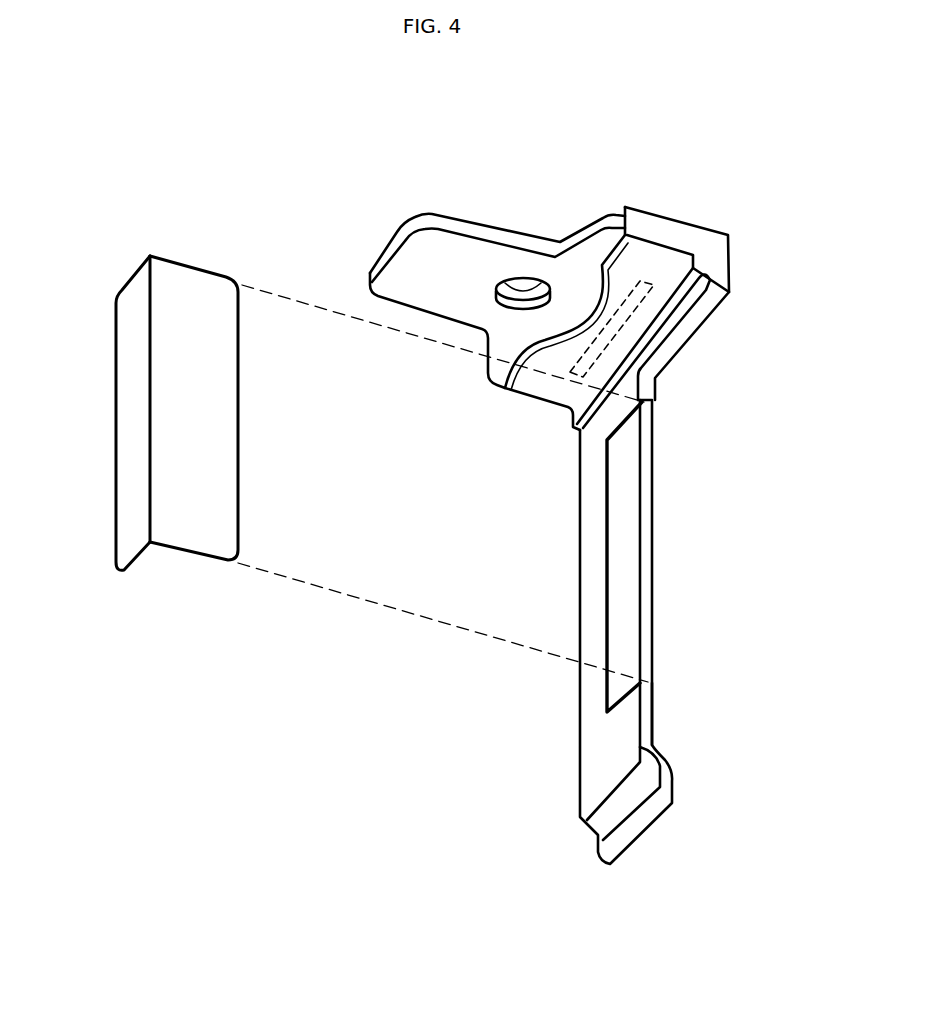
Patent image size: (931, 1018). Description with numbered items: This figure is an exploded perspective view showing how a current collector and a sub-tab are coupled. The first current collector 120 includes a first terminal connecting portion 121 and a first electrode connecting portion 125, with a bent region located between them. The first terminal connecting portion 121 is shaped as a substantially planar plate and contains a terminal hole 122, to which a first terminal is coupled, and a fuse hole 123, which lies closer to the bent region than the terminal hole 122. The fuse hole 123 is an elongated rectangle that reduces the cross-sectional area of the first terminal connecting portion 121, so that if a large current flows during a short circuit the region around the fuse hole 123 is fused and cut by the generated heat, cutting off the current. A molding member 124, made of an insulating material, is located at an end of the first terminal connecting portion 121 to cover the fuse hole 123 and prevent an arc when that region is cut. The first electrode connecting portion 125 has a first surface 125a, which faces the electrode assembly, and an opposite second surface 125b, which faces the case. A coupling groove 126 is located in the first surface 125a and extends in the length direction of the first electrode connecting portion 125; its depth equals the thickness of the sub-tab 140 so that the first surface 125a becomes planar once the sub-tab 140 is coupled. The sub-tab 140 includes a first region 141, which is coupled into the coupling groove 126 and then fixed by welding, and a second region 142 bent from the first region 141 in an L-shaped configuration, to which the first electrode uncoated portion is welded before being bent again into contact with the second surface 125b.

The first current collector 120 is at (374, 206).
The first terminal connecting portion 121 is at (468, 250).
The terminal hole 122 is at (530, 292).
The fuse hole 123 is at (648, 280).
The molding member 124 is at (722, 255).
The first electrode connecting portion 125 is at (590, 500).
The first surface 125a is at (630, 774).
The second surface 125b is at (657, 693).
The coupling groove 126 is at (625, 568).
The sub-tab 140 is at (66, 184).
The first region 141 is at (132, 295).
The second region 142 is at (183, 288).